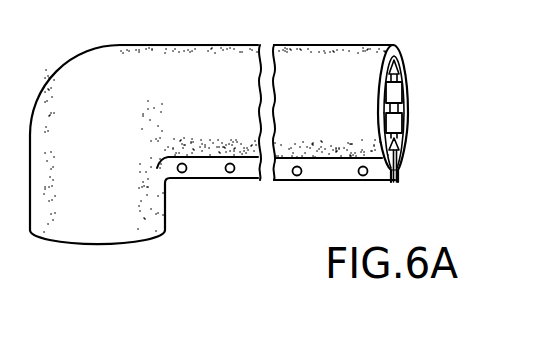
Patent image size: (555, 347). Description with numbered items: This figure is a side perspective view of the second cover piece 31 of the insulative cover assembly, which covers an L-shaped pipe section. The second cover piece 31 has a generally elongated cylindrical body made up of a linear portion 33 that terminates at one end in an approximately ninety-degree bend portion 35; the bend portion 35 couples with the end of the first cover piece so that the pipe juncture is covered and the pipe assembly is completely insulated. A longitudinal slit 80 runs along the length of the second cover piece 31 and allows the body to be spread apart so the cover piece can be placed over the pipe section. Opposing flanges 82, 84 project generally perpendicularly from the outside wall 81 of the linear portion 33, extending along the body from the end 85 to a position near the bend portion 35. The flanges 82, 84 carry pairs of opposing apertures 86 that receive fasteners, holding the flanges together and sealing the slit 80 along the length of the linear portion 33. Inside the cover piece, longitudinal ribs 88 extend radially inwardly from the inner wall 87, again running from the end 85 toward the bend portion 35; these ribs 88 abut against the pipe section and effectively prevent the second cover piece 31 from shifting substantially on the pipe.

The 90° bend portion 35 is at (70, 80).
The linear portion 33 is at (225, 60).
The second cover piece 31 is at (312, 44).
The outside wall 81 is at (160, 111).
The end 85 is at (402, 47).
The longitudinal ribs 88 is at (401, 110).
The inner wall 87 is at (403, 122).
The longitudinal slit 80 is at (397, 177).
The flange 84 is at (400, 182).
The flange 82 is at (336, 181).
The apertures 86 is at (230, 175).